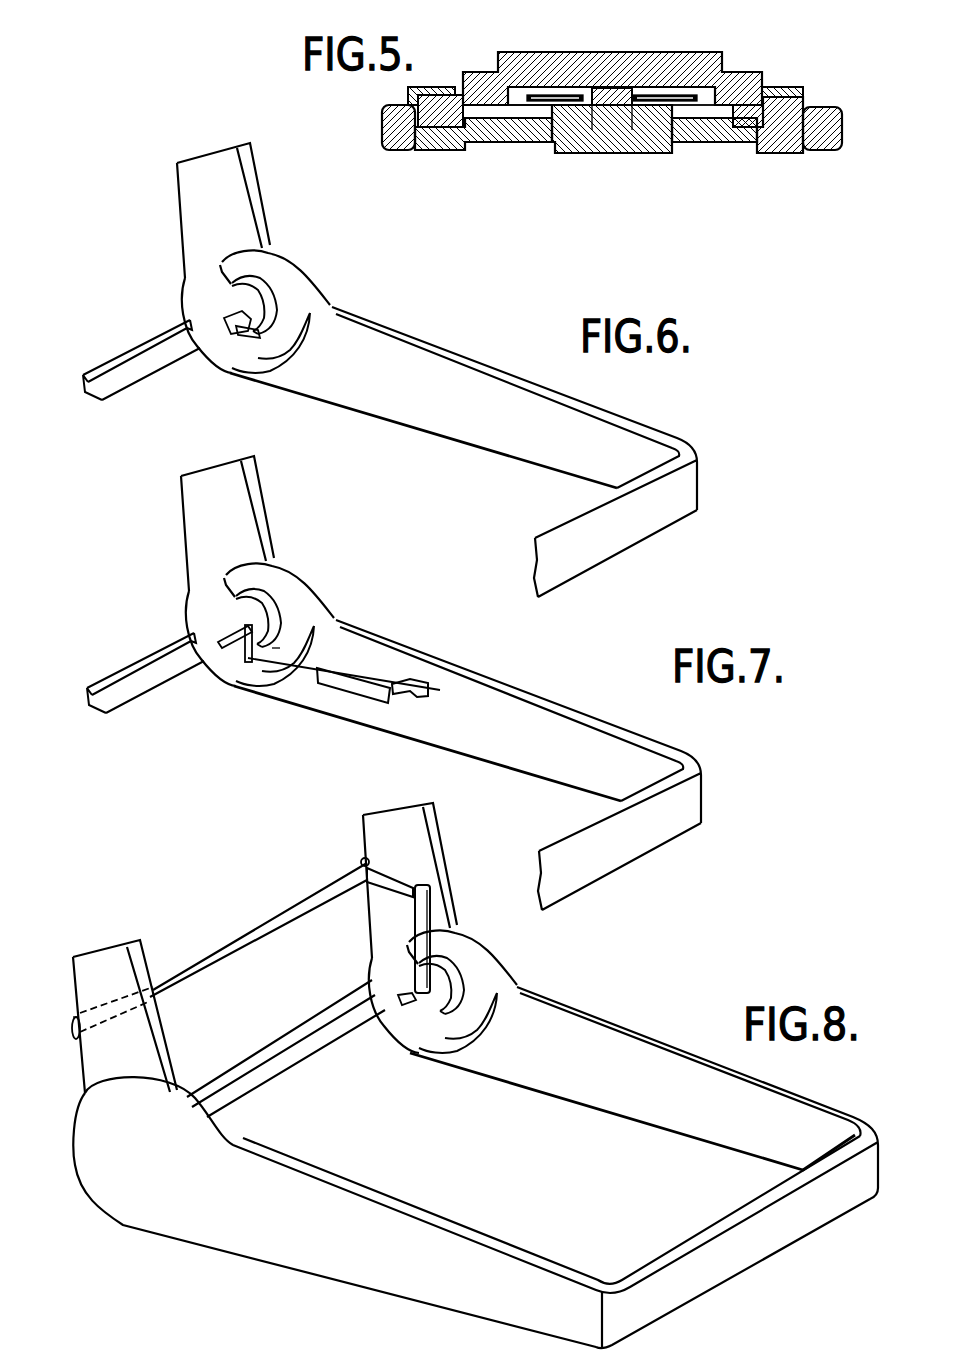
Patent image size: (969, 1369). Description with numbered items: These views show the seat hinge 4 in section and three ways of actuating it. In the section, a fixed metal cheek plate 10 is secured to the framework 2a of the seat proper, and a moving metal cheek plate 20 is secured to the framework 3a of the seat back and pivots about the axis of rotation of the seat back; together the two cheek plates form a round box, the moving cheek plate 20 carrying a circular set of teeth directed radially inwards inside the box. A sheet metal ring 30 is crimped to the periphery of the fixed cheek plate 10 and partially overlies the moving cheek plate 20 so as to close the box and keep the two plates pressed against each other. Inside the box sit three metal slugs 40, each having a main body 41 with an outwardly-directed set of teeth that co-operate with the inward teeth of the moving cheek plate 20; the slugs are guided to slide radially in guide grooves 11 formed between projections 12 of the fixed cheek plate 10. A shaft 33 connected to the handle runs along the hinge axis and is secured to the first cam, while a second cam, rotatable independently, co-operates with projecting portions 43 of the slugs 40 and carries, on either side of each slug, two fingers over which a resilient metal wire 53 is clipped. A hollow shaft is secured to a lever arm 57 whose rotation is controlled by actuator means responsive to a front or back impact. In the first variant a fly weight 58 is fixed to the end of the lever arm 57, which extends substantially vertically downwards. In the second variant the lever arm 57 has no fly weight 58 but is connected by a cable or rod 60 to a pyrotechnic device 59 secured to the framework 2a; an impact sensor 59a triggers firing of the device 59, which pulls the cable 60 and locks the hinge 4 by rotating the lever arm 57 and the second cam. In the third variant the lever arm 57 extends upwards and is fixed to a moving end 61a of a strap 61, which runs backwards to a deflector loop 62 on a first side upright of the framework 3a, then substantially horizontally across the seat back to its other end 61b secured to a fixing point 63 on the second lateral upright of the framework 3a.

In FIG. 5, the hinge 4 is at (631, 100).
In FIG. 6, the hinge 4 is at (264, 293).
In FIG. 7, the hinge 4 is at (258, 610).
In FIG. 8, the hinge 4 is at (448, 985).
In FIG. 5, the fixed metal cheek plate 10 is at (783, 145).
In FIG. 5, the guide grooves 11 is at (635, 128).
In FIG. 5, the projections 12 is at (490, 115).
In FIG. 5, the moving metal cheek plate 20 is at (707, 65).
In FIG. 5, the sheet metal ring 30 is at (837, 118).
In FIG. 5, the metal slugs 40 is at (550, 112).
In FIG. 5, the main body 41 is at (600, 120).
In FIG. 5, the projecting portions 43 is at (615, 95).
In FIG. 5, the resilient metal wire 53 is at (562, 98).
In FIG. 6, the framework of the seat back 3a is at (228, 193).
In FIG. 7, the framework of the seat back 3a is at (220, 497).
In FIG. 8, the framework of the seat back 3a is at (398, 843).
In FIG. 6, the framework of the seat proper 2a is at (600, 443).
In FIG. 7, the framework of the seat proper 2a is at (612, 765).
In FIG. 8, the framework of the seat proper 2a is at (803, 1132).
In FIG. 6, the shaft 33 is at (227, 318).
In FIG. 7, the shaft 33 is at (222, 640).
In FIG. 8, the shaft 33 is at (408, 1005).
In FIG. 6, the fly weight 58 is at (243, 332).
In FIG. 7, the lever arm 57 is at (240, 650).
In FIG. 8, the lever arm 57 is at (418, 947).
In FIG. 7, the cable or rod 60 is at (275, 652).
In FIG. 7, the pyrotechnic device 59 is at (358, 690).
In FIG. 7, the impact sensor 59a is at (428, 686).
In FIG. 8, the strap 61 is at (287, 912).
In FIG. 8, the moving end of the strap 61a is at (418, 897).
In FIG. 8, the link other end 61b is at (73, 1037).
In FIG. 8, the deflector loop 62 is at (363, 858).
In FIG. 8, the fixing point 63 is at (75, 1018).